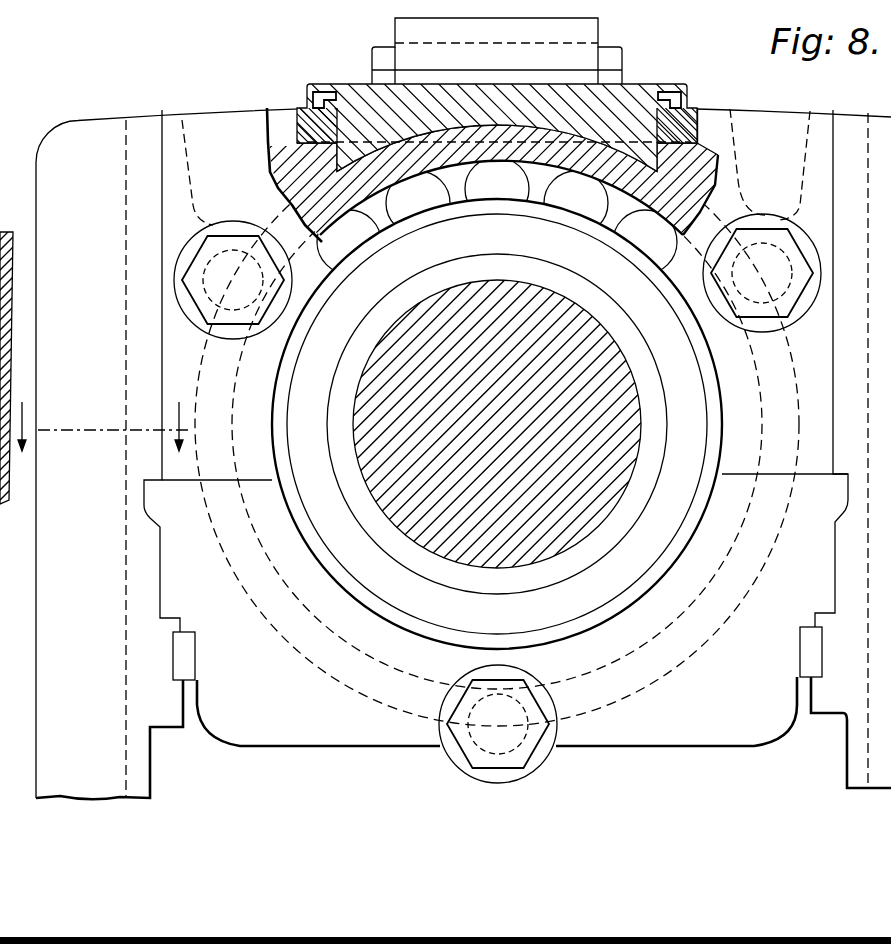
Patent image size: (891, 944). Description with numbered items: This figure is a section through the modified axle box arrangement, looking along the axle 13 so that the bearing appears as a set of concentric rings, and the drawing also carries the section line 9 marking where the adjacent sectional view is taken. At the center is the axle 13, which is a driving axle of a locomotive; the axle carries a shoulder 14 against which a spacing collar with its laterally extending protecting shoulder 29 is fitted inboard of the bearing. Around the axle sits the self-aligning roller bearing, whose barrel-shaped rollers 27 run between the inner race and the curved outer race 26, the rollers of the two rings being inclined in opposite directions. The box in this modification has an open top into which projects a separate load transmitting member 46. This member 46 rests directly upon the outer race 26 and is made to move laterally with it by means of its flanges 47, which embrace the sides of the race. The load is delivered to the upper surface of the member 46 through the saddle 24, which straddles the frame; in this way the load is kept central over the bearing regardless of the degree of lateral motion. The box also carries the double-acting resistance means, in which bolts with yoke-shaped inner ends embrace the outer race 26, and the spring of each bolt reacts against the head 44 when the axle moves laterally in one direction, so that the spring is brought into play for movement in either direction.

The section line 9- 9 is at (102, 413).
The axle 13 is at (480, 293).
The shoulders 14 is at (406, 290).
The saddle 24 is at (407, 32).
The outer race 26 is at (357, 195).
The barrel-shaped rollers 27 is at (428, 200).
The protecting shoulder 29 is at (310, 355).
The head 44 is at (212, 243).
The load transmitting member 46 is at (362, 97).
The flanges 47 is at (593, 185).